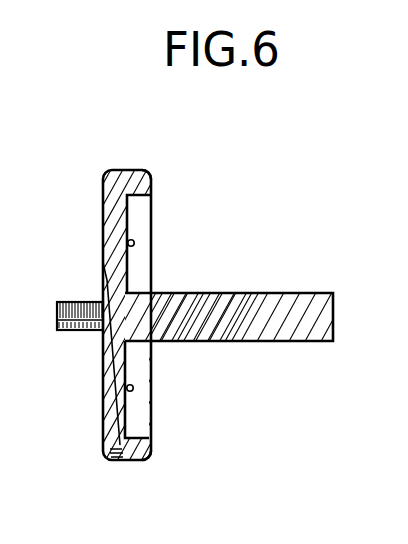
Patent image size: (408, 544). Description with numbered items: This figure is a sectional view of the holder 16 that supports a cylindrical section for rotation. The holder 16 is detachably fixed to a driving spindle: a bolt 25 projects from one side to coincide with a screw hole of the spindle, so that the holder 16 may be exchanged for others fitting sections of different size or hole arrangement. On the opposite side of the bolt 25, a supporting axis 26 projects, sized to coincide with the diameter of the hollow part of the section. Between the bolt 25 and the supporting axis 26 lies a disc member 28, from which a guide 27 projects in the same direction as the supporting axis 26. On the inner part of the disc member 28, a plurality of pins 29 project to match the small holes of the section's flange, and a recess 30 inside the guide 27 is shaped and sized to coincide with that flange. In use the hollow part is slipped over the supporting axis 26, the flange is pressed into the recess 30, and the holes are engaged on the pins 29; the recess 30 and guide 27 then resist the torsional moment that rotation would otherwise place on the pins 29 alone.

The holder 16 is at (182, 258).
The bolt 25 is at (75, 330).
The supporting axis 26 is at (295, 310).
The guide 27 is at (149, 178).
The disc member 28 is at (103, 215).
The pins 29 is at (134, 241).
The recess 30 is at (135, 352).